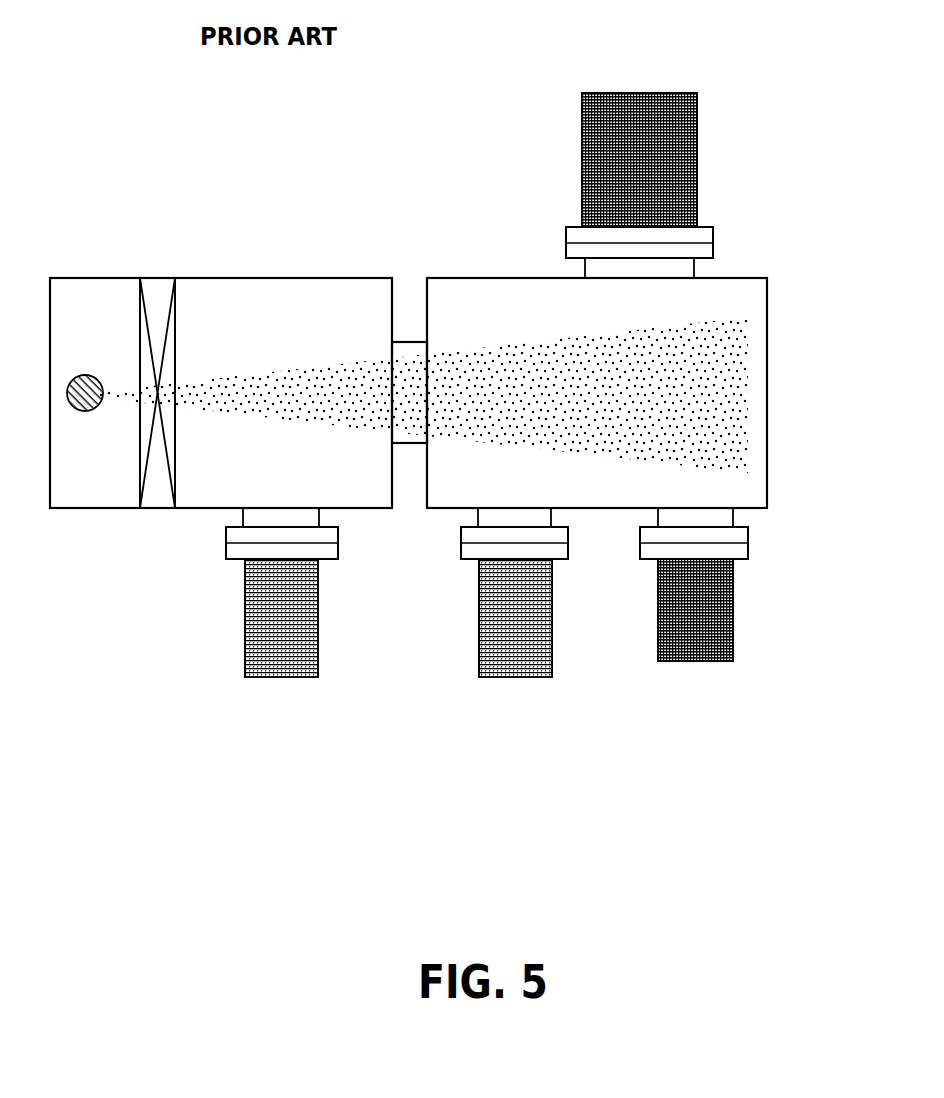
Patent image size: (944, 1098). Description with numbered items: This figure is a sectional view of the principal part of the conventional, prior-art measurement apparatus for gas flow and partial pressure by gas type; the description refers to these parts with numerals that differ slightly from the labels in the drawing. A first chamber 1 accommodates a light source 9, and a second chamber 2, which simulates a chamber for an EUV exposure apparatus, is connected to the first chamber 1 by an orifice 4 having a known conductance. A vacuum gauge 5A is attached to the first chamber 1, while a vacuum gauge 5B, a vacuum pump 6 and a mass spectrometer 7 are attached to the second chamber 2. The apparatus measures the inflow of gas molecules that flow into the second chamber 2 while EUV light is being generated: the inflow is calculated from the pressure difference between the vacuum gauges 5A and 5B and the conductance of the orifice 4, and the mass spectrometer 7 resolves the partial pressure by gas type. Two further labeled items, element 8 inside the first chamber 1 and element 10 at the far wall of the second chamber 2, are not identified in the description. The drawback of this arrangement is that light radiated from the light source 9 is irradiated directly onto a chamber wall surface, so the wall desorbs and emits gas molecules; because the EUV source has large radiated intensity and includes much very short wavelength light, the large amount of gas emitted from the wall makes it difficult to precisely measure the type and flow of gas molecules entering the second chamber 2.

The first chamber 1 is at (273, 277).
The second chamber 2 is at (739, 277).
The orifice 4 is at (420, 340).
The vacuum gauge 5A is at (283, 677).
The vacuum gauge 5B is at (516, 677).
The vacuum pump 6 is at (653, 95).
The mass spectrometer 7 is at (688, 662).
The lens 8 is at (158, 288).
The light source 9 is at (73, 410).
The light beam 10 is at (767, 378).